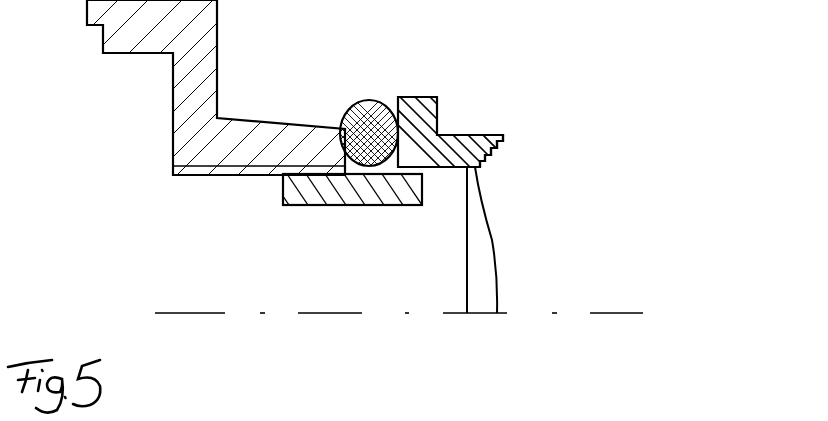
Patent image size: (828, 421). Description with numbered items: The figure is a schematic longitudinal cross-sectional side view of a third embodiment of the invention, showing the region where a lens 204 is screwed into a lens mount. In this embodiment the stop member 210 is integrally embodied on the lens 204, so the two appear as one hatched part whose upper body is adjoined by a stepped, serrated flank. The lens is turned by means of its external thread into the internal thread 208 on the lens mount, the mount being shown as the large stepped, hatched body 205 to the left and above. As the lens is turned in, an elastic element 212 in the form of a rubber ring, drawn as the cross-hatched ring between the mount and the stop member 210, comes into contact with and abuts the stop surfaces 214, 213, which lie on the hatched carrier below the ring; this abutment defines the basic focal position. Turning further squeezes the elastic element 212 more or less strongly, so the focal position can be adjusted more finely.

The lens 204 is at (489, 112).
The first housing part 205 is at (200, 210).
The internal thread 208 is at (224, 193).
The stop member 210 is at (450, 169).
The elastic element 212 is at (370, 138).
The stop surface 213 is at (389, 237).
The stop surface 214 is at (345, 223).